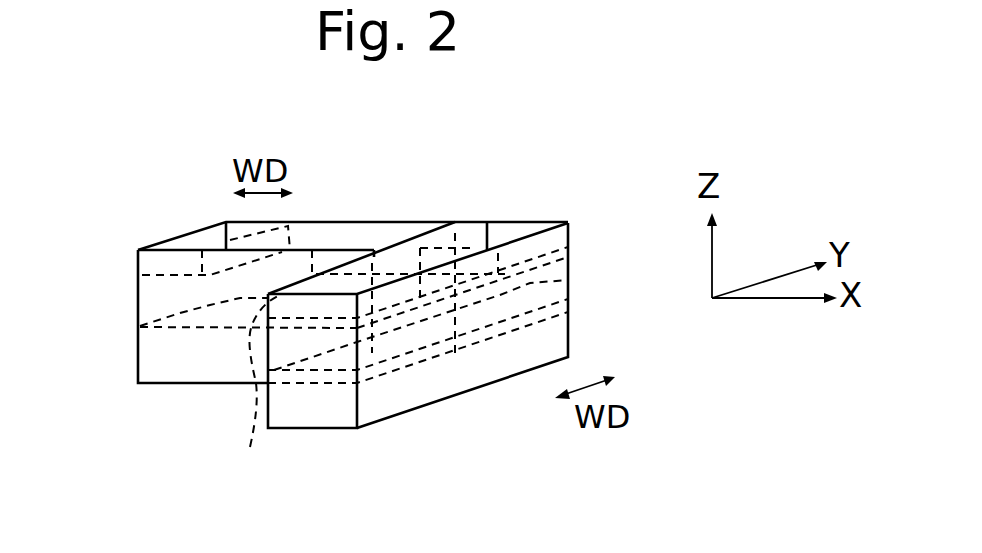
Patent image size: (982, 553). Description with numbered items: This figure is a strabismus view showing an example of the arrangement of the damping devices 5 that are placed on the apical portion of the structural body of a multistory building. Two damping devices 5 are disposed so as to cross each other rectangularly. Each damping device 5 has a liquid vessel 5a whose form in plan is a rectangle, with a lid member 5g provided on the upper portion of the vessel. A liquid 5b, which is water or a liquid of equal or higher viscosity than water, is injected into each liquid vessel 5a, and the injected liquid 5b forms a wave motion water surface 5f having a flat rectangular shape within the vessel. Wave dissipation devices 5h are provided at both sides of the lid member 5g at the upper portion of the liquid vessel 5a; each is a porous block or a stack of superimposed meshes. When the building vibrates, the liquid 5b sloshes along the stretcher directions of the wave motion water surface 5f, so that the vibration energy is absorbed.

The damping device 5 is at (325, 216).
The liquid vessel 5a is at (415, 226).
The liquid 5b is at (198, 370).
The wave motion water surface 5f is at (178, 312).
The lid member 5g is at (345, 227).
The wave dissipation device 5h is at (167, 268).